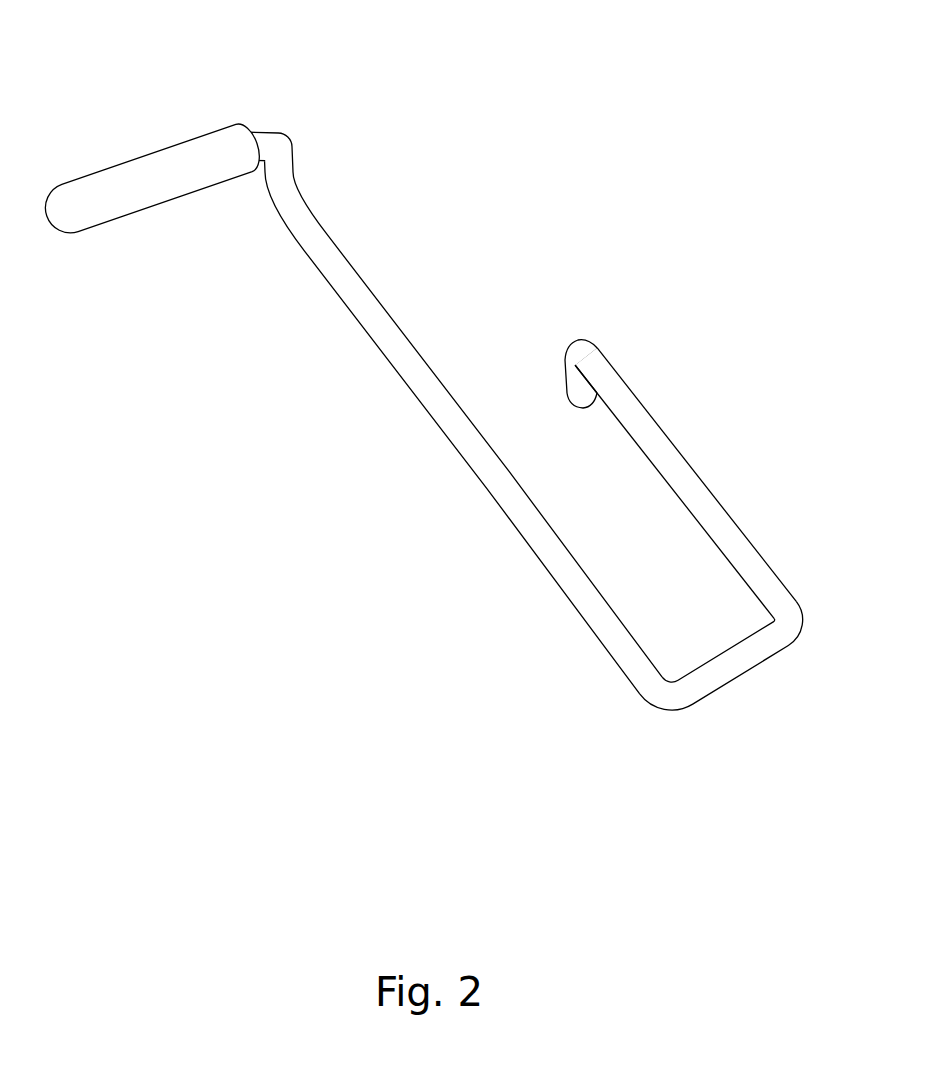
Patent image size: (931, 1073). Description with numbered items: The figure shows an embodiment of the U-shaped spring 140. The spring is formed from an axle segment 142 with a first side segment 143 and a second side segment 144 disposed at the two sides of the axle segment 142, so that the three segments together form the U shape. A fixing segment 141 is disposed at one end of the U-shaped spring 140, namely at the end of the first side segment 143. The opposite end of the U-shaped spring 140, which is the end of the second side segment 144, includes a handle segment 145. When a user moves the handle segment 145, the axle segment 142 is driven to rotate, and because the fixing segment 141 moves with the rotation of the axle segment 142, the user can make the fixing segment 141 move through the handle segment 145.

The U-shaped spring 140 is at (441, 820).
The fixing segment 141 is at (563, 378).
The axle segment 142 is at (733, 680).
The first side segment 143 is at (698, 478).
The second side segment 144 is at (486, 487).
The handle segment 145 is at (148, 153).